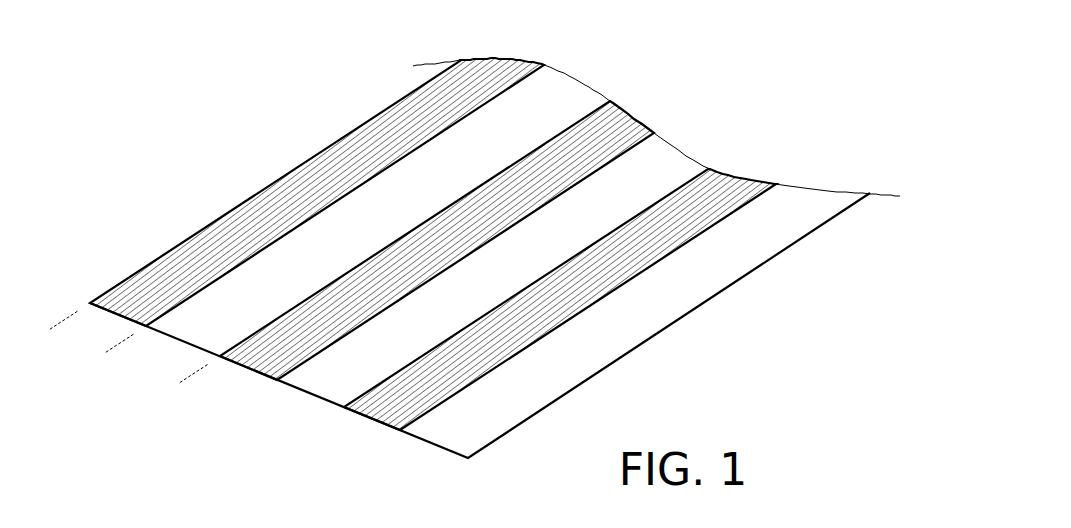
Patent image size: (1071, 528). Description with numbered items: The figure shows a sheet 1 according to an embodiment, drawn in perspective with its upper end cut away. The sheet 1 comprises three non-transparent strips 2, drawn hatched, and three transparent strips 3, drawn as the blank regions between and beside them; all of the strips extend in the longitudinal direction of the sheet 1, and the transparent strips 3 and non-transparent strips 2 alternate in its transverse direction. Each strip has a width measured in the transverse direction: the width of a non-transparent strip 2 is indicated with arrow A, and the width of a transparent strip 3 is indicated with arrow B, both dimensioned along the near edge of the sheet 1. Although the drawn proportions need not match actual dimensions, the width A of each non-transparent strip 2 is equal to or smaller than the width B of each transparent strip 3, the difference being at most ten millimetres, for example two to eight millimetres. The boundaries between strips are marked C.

The sheet 1 is at (242, 100).
The non-transparent strip 2 is at (187, 263).
The transparent strip 3 is at (803, 207).
The width of non-transparent strip A is at (62, 321).
The width of transparent strip B is at (118, 344).
The boundary edge of coated region C is at (243, 342).